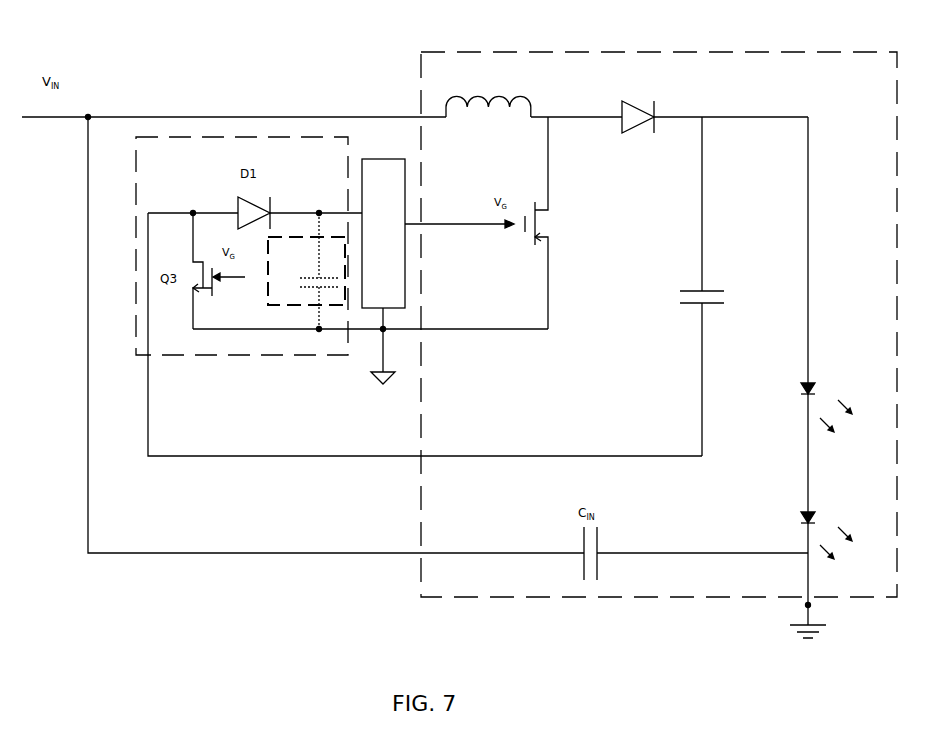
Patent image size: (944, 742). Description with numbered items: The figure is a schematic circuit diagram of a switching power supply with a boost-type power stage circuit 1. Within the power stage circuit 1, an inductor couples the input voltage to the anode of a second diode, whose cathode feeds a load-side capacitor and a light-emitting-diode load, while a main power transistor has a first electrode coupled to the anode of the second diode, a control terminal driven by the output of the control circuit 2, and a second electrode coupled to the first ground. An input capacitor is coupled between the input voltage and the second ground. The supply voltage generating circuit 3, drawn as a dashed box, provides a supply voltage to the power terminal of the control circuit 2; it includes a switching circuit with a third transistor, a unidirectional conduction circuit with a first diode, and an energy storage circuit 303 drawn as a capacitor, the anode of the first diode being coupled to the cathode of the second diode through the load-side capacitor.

The power stage circuit 1 is at (527, 52).
The control circuit 2 is at (372, 159).
The supply voltage generating circuit 3 is at (153, 137).
The energy storage circuit 303 is at (283, 305).